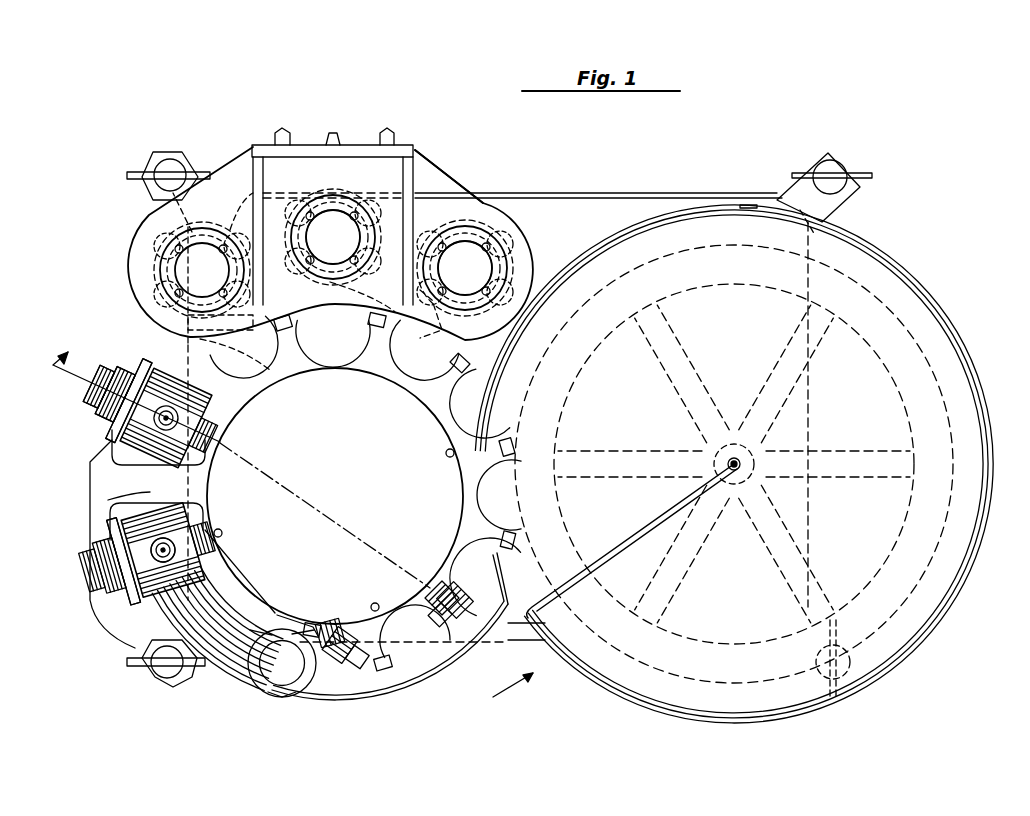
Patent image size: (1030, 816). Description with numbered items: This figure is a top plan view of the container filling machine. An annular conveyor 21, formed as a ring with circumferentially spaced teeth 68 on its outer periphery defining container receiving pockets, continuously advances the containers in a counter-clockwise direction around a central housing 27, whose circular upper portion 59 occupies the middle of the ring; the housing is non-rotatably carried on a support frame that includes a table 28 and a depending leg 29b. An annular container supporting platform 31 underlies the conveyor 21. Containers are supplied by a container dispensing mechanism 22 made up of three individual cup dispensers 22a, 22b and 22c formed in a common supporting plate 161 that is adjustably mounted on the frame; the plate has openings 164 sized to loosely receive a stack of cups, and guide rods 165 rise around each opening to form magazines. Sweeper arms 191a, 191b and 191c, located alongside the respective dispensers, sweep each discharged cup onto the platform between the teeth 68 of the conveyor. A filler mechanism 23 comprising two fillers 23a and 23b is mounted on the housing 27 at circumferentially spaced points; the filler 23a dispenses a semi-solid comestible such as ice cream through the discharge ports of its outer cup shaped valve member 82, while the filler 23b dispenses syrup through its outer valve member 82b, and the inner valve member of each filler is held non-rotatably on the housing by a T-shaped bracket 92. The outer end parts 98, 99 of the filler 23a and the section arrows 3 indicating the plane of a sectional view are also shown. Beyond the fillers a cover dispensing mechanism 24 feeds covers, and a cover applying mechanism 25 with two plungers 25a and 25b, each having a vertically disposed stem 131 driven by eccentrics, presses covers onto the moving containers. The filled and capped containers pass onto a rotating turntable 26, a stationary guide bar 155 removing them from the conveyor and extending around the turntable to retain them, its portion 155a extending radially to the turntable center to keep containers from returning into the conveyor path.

The section line 3- 3 is at (281, 531).
The conveyor 21 is at (224, 600).
The container dispensing mechanism 22 is at (470, 178).
The container dispenser 22a is at (490, 232).
The container dispenser 22b is at (345, 190).
The container dispenser 22c is at (218, 238).
The filler mechanism 23 is at (88, 478).
The filler 23a is at (85, 424).
The filler 23b is at (76, 551).
The cover dispensing mechanism 24 is at (270, 702).
The cover applying mechanism 25 is at (412, 584).
The plunger 25a is at (338, 618).
The plunger 25b is at (445, 585).
The turntable 26 is at (968, 338).
The housing 27 is at (412, 424).
The table 28 is at (578, 205).
The motor shaft 29b is at (152, 559).
The container supporting platform 31 is at (234, 693).
The disc 59 is at (332, 459).
The teeth 68 is at (370, 335).
The outer cup shaped member 82 is at (120, 440).
The outer valve member 82b is at (145, 602).
The T-shaped bracket 92 is at (108, 500).
The end cap 98 is at (96, 362).
The cylinder 99 is at (116, 358).
The stem 131 is at (345, 668).
The guide bar 155 is at (562, 272).
The guide bar portion 155a is at (640, 540).
The supporting plate 161 is at (432, 168).
The openings 164 is at (450, 248).
The guide rods 165 is at (320, 214).
The sweeper arm 191a is at (466, 314).
The sweeper arm 191b is at (372, 293).
The sweeper arm 191c is at (233, 346).